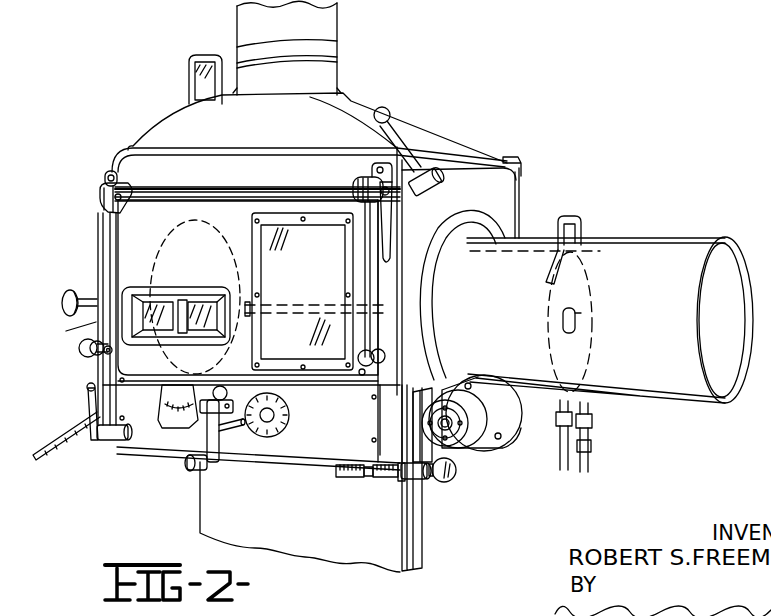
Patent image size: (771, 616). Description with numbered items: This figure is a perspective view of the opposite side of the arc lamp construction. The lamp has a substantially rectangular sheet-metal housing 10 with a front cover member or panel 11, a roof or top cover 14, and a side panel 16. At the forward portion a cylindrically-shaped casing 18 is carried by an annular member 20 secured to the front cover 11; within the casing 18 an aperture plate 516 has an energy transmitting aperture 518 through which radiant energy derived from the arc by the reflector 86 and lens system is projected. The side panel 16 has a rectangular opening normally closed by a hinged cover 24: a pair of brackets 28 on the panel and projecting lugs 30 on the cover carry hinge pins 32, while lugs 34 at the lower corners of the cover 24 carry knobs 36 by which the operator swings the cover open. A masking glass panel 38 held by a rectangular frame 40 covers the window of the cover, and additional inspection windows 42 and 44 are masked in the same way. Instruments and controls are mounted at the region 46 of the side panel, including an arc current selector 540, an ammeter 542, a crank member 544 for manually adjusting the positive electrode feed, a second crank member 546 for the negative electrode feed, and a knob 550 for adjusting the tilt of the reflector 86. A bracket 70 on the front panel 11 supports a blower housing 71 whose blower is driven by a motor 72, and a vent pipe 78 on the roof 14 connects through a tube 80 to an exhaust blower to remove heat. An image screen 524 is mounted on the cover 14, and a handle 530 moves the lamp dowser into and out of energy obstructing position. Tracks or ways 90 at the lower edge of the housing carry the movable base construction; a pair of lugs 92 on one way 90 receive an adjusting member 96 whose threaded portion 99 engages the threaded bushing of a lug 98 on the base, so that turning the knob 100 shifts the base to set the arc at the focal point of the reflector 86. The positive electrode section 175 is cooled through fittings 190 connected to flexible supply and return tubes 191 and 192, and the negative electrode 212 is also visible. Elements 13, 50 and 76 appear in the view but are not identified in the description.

The housing 10 is at (128, 135).
The front cover member 11 is at (515, 189).
The pipe 13 is at (423, 533).
The roof or top cover 14 is at (177, 125).
The side panel 16 is at (195, 172).
The cylindrically-shaped casing 18 is at (607, 250).
The annular member 20 is at (490, 230).
The hinged cover 24 is at (128, 246).
The brackets 28 is at (100, 188).
The projecting lugs 30 is at (126, 189).
The hinge pins 32 is at (122, 213).
The projecting lugs 34 is at (105, 355).
The knobs 36 is at (80, 352).
The glass panel 38 is at (309, 258).
The rectangular frame 40 is at (313, 216).
The inspection window 42 is at (218, 306).
The inspection window 44 is at (186, 285).
The region of the side panel 46 is at (248, 448).
The corner cap 50 is at (521, 163).
The bracket 70 is at (430, 399).
The blower housing 71 is at (508, 452).
The motor 72 is at (467, 450).
The cover contour 76 is at (338, 114).
The vent pipe 78 is at (338, 59).
The tube 80 is at (338, 17).
The reflector 86 is at (206, 231).
The tracks or ways 90 is at (287, 468).
The spaced lugs 92 is at (350, 475).
The adjusting member 96 is at (418, 486).
The lug 98 is at (368, 479).
The threaded portion 99 is at (385, 479).
The manipulating knob 100 is at (453, 480).
The positive electrode section 175 is at (328, 305).
The fittings 190 is at (580, 414).
The flexible tube 191 is at (589, 446).
The flexible tube 192 is at (589, 459).
The negative electrode 212 is at (73, 424).
The aperture plate 516 is at (600, 279).
The energy transmitting aperture 518 is at (583, 314).
The image screen 524 is at (208, 45).
The handle 530 is at (388, 124).
The arc current selector 540 is at (273, 438).
The ammeter 542 is at (163, 432).
The crank member 544 is at (200, 440).
The second crank member 546 is at (100, 442).
The control knob 550 is at (84, 298).